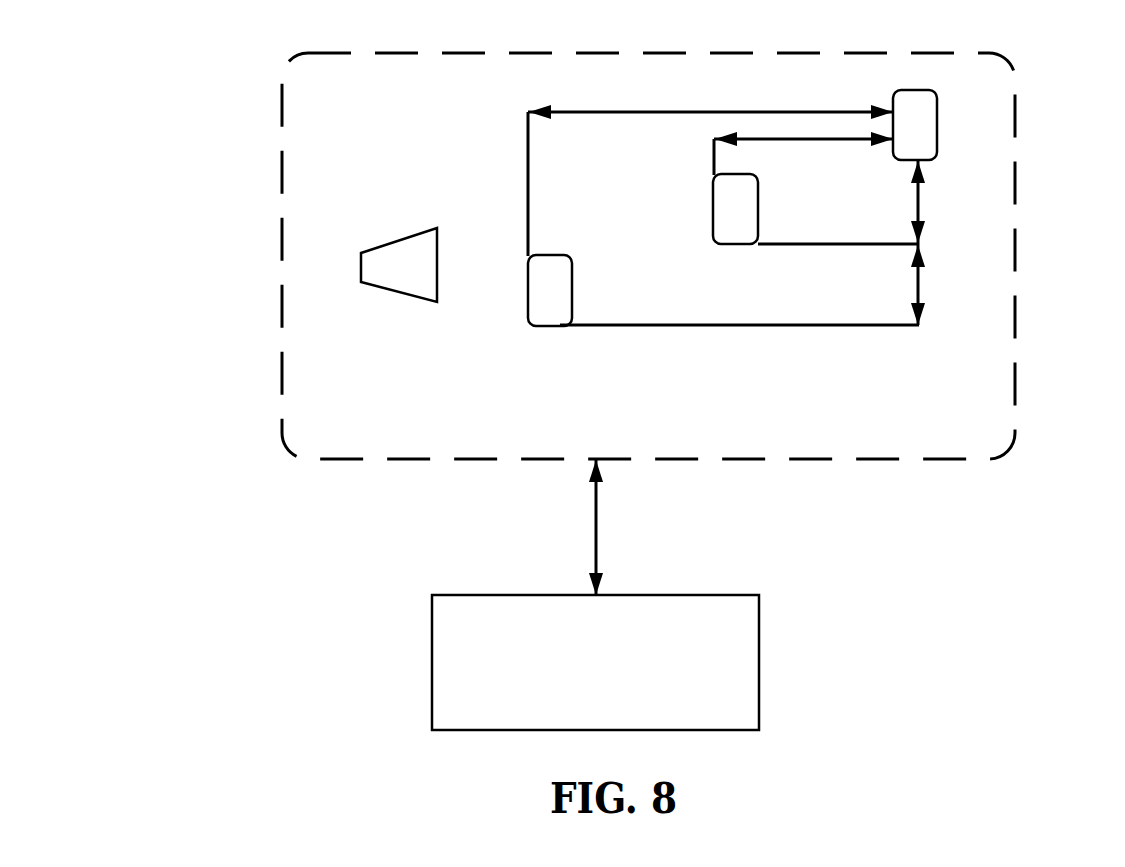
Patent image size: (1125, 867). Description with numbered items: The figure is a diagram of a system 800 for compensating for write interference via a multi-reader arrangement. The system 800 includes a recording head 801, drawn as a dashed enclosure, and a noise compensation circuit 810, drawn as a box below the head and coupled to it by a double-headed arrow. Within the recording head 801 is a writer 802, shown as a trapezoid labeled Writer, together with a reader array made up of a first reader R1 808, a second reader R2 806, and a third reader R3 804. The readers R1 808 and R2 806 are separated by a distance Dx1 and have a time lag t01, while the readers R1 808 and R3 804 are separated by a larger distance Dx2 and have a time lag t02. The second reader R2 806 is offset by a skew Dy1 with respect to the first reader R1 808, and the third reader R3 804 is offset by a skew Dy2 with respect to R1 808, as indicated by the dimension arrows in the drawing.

The system for compensating for write interference via a multi-reader system 800 is at (117, 92).
The recording head 801 is at (291, 167).
The writer 802 is at (370, 262).
The third reader R3 804 is at (556, 312).
The second reader R2 806 is at (734, 233).
The first reader R1 808 is at (923, 105).
The noise compensation circuit 810 is at (475, 612).